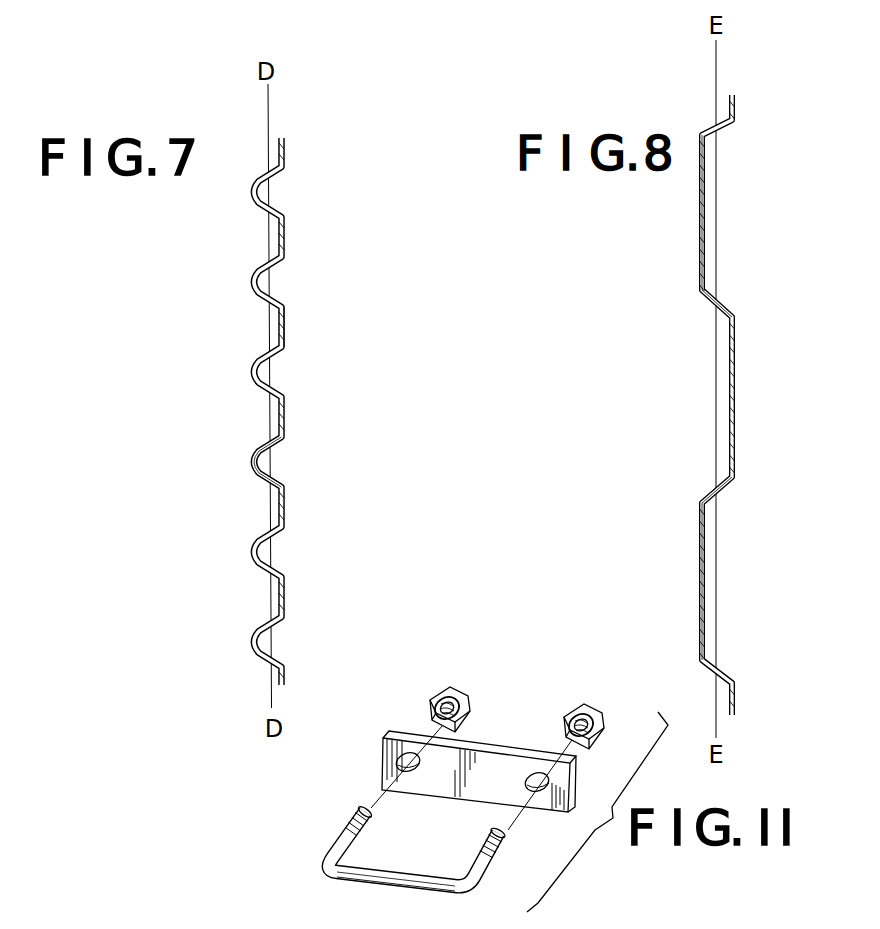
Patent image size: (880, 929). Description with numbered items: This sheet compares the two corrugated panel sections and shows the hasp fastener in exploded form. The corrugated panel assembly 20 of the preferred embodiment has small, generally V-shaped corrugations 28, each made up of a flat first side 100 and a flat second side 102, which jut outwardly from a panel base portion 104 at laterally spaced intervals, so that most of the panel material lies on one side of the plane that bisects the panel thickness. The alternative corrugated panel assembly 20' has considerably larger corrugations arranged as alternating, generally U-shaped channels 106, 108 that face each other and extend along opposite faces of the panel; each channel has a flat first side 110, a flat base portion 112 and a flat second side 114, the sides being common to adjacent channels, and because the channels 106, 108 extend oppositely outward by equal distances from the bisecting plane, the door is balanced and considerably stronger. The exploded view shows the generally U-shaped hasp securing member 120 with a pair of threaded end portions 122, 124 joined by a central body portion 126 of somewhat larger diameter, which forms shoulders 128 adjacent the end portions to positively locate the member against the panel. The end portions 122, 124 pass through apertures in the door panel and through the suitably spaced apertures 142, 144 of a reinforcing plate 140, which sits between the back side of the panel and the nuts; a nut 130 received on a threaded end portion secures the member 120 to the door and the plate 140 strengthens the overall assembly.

In FIG. 7, the corrugated panel assembly 20 is at (211, 411).
In FIG. 8, the corrugated panel assembly 20' is at (666, 405).
In FIG. 7, the V-shaped corrugations 28 is at (279, 458).
In FIG. 7, the flat first side 100 is at (263, 447).
In FIG. 7, the flat second side 102 is at (267, 478).
In FIG. 7, the panel base portion 104 is at (286, 328).
In FIG. 8, the U-shaped channel 106 is at (688, 256).
In FIG. 8, the U-shaped channel 108 is at (740, 438).
In FIG. 8, the flat first side 110 is at (725, 305).
In FIG. 8, the flat base portion 112 is at (735, 383).
In FIG. 8, the flat second side 114 is at (725, 491).
In FIG. 11, the hasp securing member 120 is at (314, 857).
In FIG. 11, the threaded end portion 122 is at (352, 815).
In FIG. 11, the threaded end portion 124 is at (507, 847).
In FIG. 11, the central body portion 126 is at (380, 877).
In FIG. 11, the shoulders 128 is at (440, 692).
In FIG. 11, the nut 130 is at (580, 703).
In FIG. 11, the reinforcing plate 140 is at (490, 762).
In FIG. 11, the aperture 142 is at (396, 760).
In FIG. 11, the aperture 144 is at (548, 779).